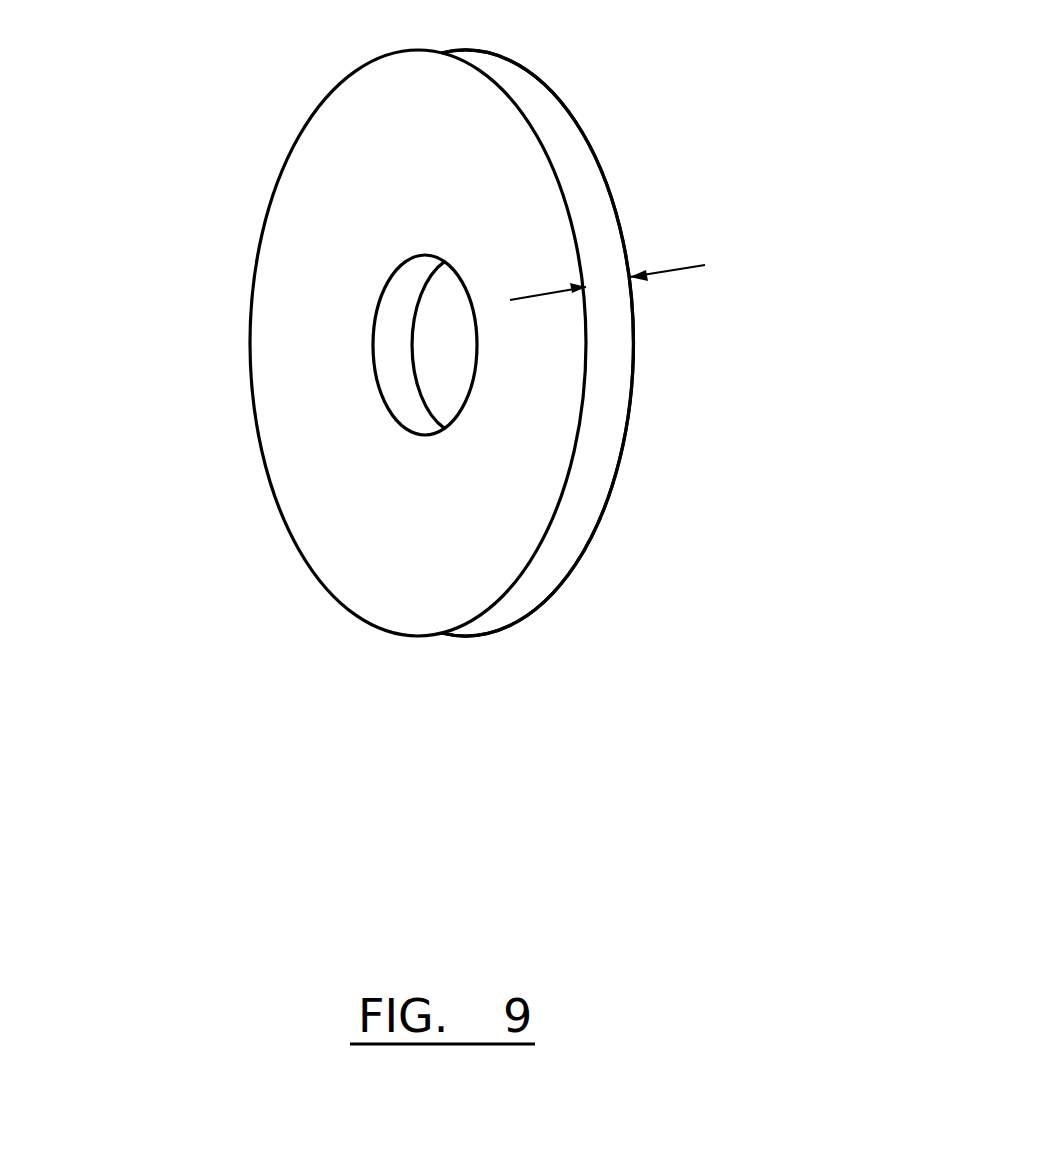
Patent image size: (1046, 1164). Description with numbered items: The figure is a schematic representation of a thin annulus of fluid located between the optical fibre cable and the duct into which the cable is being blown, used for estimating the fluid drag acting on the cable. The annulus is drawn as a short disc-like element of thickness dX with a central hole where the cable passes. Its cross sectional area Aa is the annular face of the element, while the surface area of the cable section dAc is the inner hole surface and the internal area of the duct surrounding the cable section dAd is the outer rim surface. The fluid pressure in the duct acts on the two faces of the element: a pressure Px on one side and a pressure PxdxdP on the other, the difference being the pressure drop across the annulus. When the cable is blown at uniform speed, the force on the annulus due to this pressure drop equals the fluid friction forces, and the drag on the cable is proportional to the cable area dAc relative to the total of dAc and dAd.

The cross sectional area of the annulus Aa is at (337, 492).
The surface area of the cable section dAc is at (393, 313).
The internal area of the duct surrounding the cable section dAd is at (560, 128).
The thickness of the annulus element dX is at (639, 273).
The fluid pressure at position x Px is at (225, 730).
The fluid pressure at position x plus the pressure increment PxdxdP is at (799, 544).